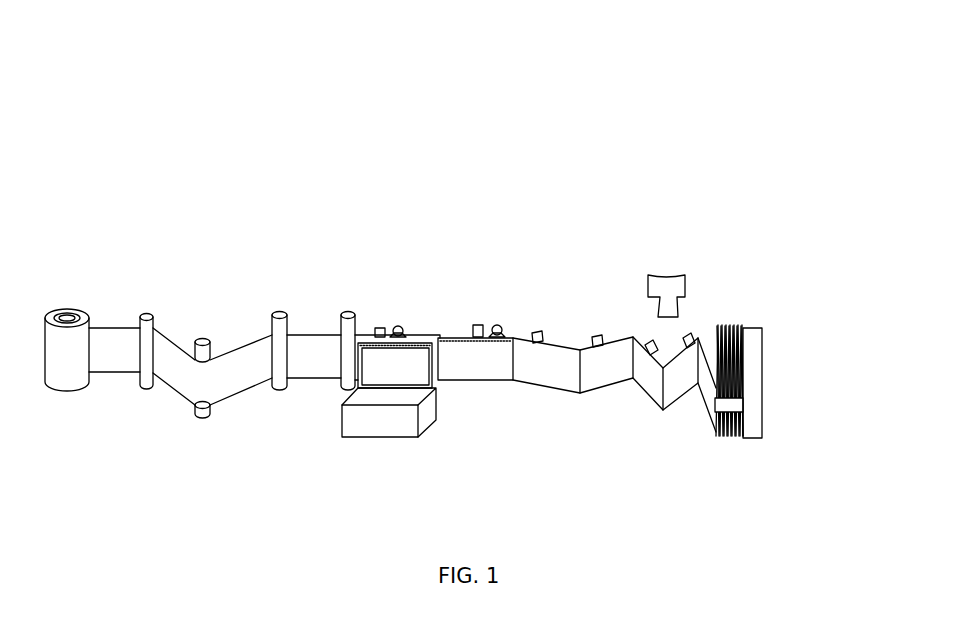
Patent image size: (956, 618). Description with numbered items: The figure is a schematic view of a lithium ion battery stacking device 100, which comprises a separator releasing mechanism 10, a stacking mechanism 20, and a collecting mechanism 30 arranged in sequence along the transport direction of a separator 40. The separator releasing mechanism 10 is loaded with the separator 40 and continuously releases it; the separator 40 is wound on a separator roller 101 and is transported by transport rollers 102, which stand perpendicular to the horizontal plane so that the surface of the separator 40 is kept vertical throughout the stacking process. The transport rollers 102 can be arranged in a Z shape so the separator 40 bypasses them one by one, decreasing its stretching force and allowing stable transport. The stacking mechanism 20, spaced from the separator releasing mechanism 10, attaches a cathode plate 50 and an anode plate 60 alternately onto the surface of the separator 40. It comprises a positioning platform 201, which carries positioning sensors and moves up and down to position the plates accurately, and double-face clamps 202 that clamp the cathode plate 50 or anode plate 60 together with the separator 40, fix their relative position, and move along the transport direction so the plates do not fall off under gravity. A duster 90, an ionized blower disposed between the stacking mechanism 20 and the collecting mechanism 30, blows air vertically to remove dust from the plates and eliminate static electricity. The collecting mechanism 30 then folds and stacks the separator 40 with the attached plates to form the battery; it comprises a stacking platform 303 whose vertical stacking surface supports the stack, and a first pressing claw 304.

The lithium ion battery stacking device 100 is at (388, 62).
The separator releasing mechanism 10 is at (183, 239).
The separator roller 101 is at (73, 312).
The transport roller 102 is at (146, 312).
The separator 40 is at (249, 357).
The stacking mechanism 20 is at (523, 487).
The positioning platform 201 is at (395, 425).
The double-face clamp 202 is at (484, 363).
The cathode plate 50 is at (545, 380).
The anode plate 60 is at (617, 340).
The duster 90 is at (665, 278).
The collecting mechanism 30 is at (859, 373).
The stacking platform 303 is at (752, 417).
The first pressing claw 304 is at (735, 404).